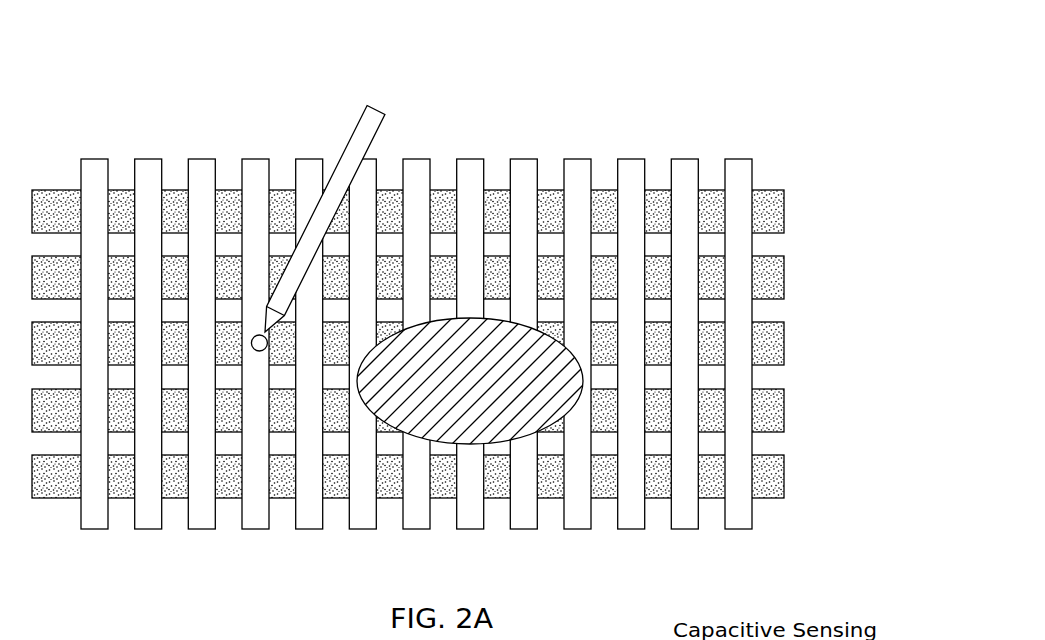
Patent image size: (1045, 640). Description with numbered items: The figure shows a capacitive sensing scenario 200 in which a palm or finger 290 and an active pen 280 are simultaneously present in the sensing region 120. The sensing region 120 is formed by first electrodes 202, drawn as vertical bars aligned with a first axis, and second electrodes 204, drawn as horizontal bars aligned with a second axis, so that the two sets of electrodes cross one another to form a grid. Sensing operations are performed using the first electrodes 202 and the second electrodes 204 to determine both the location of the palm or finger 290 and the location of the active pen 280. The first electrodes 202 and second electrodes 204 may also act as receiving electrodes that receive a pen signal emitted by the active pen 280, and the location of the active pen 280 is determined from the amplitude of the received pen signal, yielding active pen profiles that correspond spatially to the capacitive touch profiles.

The capacitive sensing scenario 200 is at (484, 298).
The sensing region 120 is at (484, 348).
The first electrodes 202 is at (770, 545).
The second electrodes 204 is at (795, 507).
The active pen 280 is at (345, 156).
The palm or finger 290 is at (497, 332).